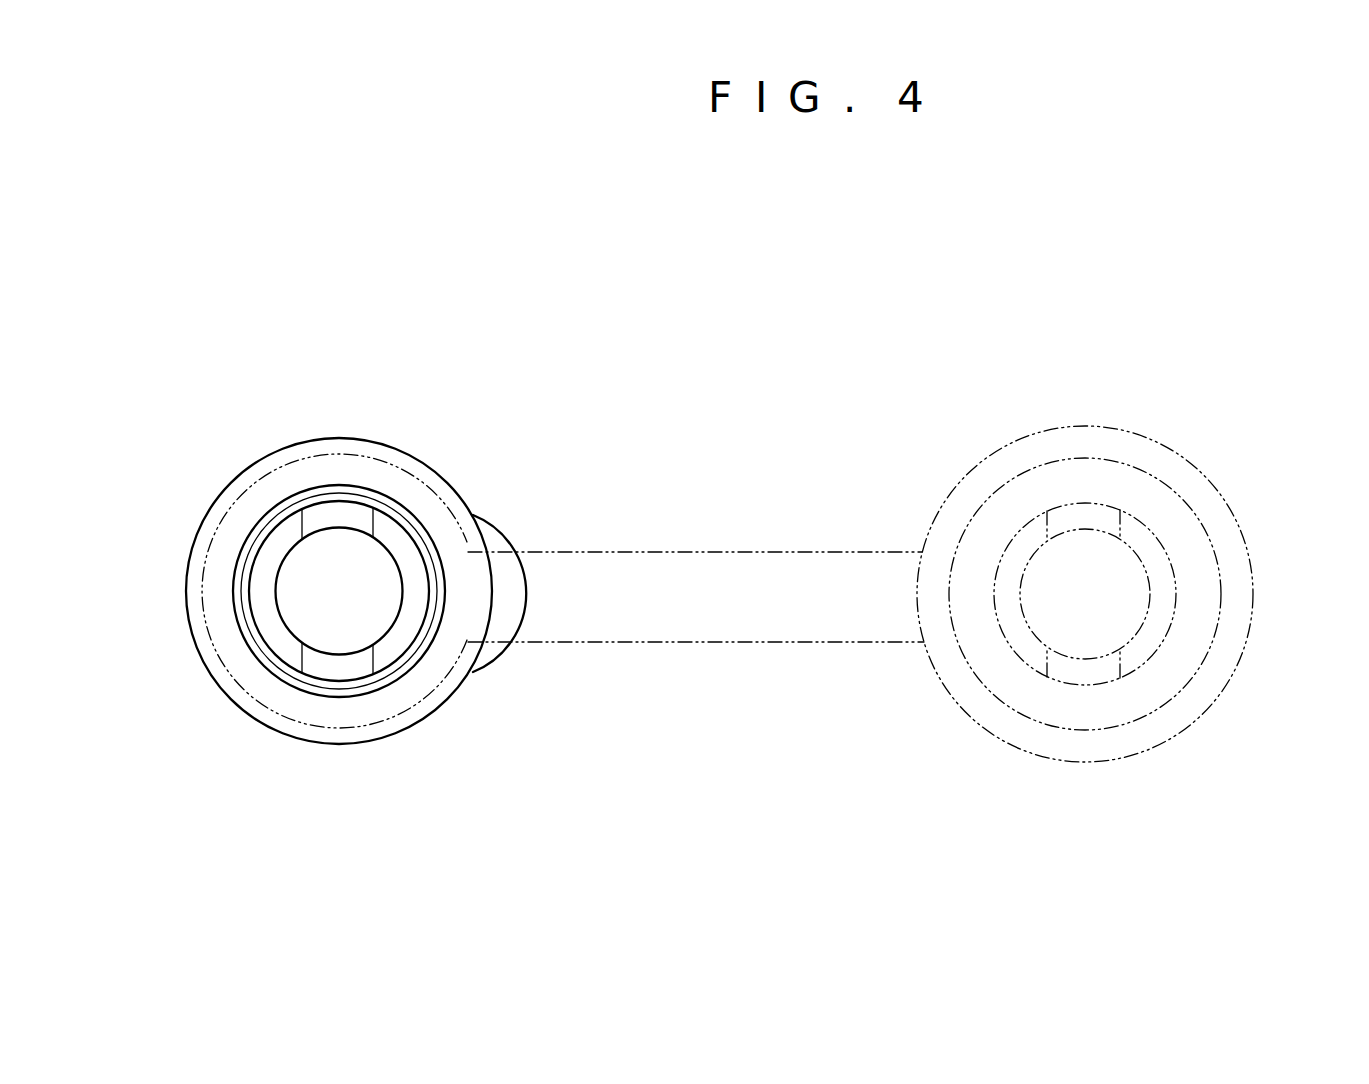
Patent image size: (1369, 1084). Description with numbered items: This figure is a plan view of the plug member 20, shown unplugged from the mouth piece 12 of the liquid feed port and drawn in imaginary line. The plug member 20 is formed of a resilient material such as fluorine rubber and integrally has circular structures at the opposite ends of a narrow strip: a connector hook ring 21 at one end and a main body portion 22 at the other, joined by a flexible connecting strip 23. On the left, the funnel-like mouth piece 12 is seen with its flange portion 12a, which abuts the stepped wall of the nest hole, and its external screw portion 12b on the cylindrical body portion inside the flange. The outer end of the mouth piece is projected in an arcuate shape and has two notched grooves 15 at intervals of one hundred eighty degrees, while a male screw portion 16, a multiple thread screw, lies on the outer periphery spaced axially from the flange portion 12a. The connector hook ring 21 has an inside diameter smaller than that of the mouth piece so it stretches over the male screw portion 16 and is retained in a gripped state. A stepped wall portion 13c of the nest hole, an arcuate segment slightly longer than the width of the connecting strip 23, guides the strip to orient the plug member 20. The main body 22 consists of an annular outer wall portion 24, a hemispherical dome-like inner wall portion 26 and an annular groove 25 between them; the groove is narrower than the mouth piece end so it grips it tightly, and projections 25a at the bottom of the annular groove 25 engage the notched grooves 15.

The mouth piece 12 is at (212, 687).
The flange portion 12a is at (242, 470).
The external screw portion 12b is at (398, 545).
The stepped wall portion 13c is at (524, 598).
The notched grooves 15 is at (335, 513).
The male screw portion 16 is at (242, 585).
The plug member 20 is at (1082, 417).
The connector hook ring 21 is at (338, 735).
The main body portion 22 is at (1222, 492).
The connecting strip 23 is at (762, 620).
The annular outer wall portion 24 is at (1107, 470).
The annular groove 25 is at (1020, 550).
The projections 25a is at (1082, 515).
The hemispherical dome-like inner wall portion 26 is at (1127, 620).